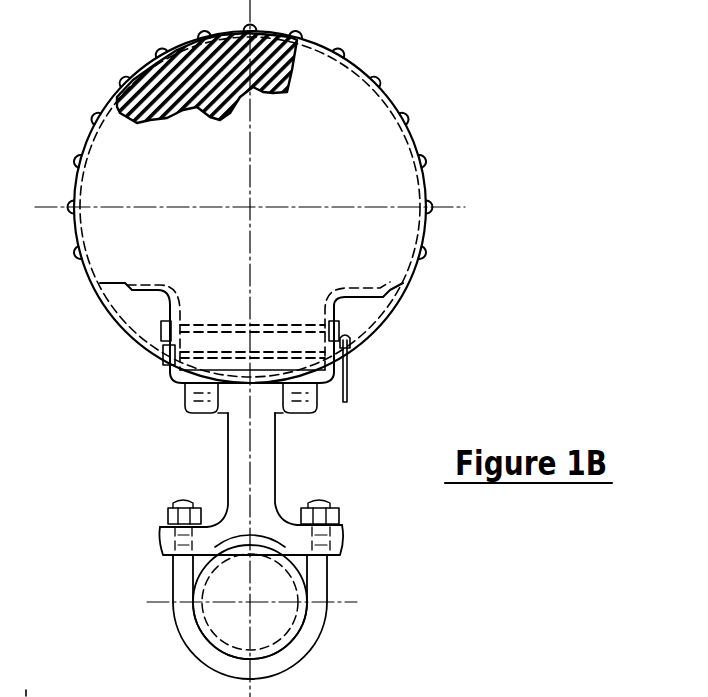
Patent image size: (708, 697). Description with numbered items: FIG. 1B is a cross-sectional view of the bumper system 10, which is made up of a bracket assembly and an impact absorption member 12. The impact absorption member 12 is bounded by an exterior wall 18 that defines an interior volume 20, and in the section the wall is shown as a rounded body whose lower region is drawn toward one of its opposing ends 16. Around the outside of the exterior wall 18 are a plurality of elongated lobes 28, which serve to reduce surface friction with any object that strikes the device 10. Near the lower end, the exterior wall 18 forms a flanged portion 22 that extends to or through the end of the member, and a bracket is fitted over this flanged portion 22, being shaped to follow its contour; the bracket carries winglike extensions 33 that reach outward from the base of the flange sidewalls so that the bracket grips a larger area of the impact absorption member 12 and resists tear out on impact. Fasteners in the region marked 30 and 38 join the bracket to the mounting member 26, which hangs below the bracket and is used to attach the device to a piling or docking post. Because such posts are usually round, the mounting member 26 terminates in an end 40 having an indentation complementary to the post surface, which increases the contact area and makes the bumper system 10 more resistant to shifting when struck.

The bumper system 10 is at (300, 435).
The impact absorption member 12 is at (390, 292).
The opposing end 16 is at (26, 680).
The exterior wall 18 is at (418, 266).
The interior volume 20 is at (172, 190).
The flanged portion 22 is at (167, 352).
The mounting member 26 is at (260, 472).
The elongated lobes 28 is at (160, 52).
The clamp 30 is at (229, 405).
The winglike extensions 33 is at (107, 291).
The mounting plate 38 is at (297, 543).
The end with indentation 40 is at (280, 590).